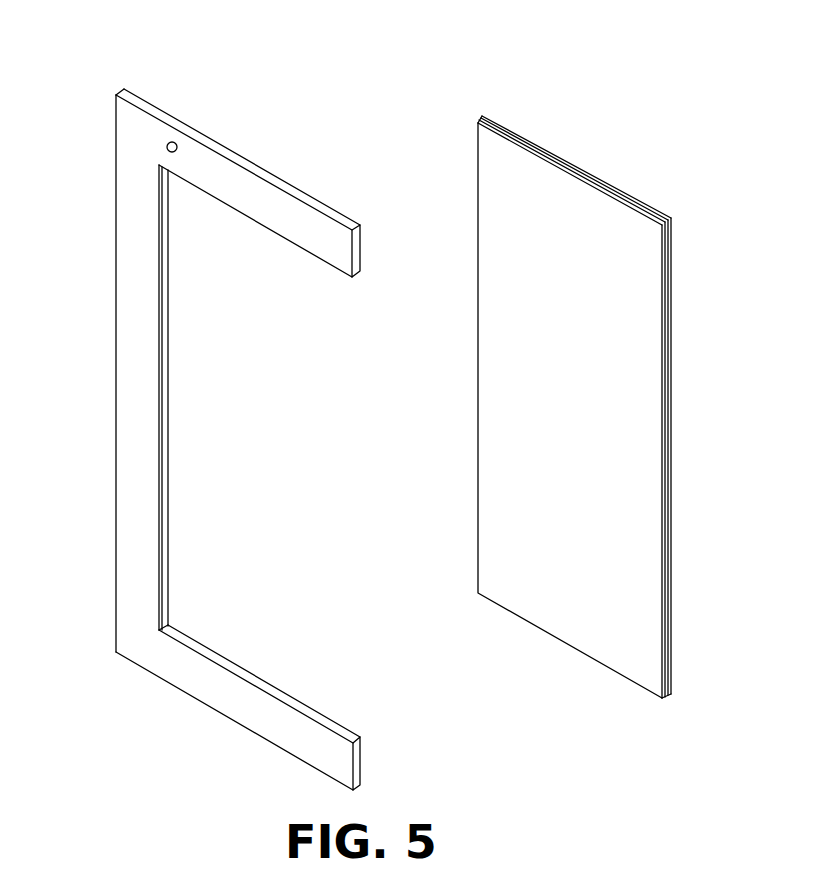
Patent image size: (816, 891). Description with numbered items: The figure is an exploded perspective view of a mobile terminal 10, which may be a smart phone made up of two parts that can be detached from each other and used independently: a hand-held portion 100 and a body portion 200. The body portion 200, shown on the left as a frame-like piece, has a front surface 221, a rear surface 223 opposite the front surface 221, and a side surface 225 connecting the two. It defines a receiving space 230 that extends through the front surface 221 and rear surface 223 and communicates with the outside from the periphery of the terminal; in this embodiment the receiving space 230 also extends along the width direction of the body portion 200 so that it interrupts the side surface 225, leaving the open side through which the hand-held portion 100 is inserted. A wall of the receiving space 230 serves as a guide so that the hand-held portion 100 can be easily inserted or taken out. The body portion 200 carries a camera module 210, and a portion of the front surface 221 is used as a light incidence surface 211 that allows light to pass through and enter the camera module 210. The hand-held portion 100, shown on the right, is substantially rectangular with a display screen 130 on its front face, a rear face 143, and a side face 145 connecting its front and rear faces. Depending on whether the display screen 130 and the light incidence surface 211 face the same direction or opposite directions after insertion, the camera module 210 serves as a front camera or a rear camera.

The mobile terminal 10 is at (138, 77).
The hand-held portion 100 is at (506, 402).
The display screen 130 is at (505, 213).
The rear face 143 is at (673, 674).
The side face 145 is at (642, 220).
The body portion 200 is at (153, 640).
The camera module 210 is at (167, 148).
The light incidence surface 211 is at (168, 151).
The front surface 221 is at (130, 272).
The rear surface 223 is at (297, 698).
The side surface 225 is at (358, 250).
The receiving space 230 is at (180, 562).